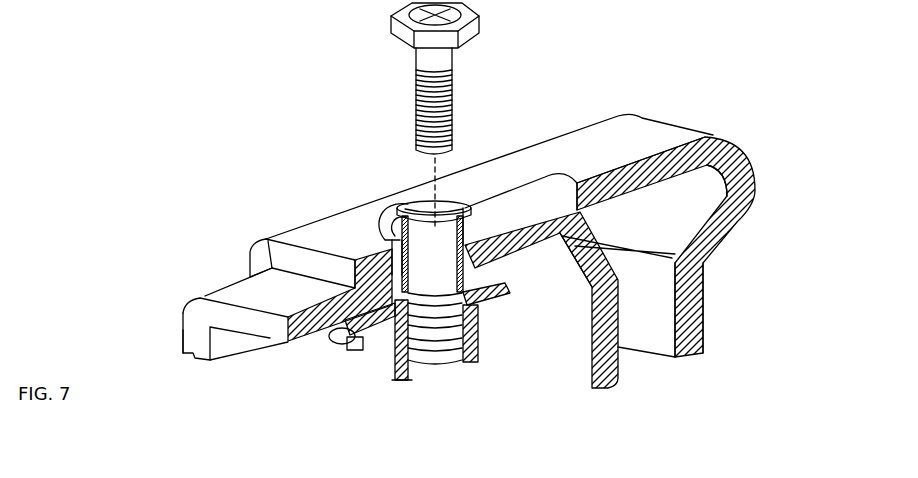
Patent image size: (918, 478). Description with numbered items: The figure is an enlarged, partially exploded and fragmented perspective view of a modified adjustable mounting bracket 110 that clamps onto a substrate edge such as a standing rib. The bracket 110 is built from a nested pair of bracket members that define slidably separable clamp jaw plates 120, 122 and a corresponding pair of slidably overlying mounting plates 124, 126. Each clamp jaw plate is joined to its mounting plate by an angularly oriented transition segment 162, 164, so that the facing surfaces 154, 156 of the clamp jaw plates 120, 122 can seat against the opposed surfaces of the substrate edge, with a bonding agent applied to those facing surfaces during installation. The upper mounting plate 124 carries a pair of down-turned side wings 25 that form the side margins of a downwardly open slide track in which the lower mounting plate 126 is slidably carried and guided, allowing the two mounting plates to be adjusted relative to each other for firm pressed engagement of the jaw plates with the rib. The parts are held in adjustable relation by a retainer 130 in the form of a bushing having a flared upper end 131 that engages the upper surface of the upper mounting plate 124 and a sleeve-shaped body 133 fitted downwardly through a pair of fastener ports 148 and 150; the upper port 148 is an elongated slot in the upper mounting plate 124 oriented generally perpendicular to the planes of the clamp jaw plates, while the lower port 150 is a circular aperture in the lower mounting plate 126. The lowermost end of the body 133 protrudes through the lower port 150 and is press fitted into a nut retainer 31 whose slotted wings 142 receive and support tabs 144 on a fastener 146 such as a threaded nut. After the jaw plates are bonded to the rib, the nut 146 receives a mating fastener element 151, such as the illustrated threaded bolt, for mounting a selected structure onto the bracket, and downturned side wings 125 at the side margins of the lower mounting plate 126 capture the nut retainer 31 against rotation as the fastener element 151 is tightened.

The down-turned side wings 25 is at (252, 257).
The nut retainer 31 is at (488, 285).
The adjustable mounting bracket 110 is at (672, 120).
The clamp jaw plate 120 is at (705, 300).
The clamp jaw plate 122 is at (575, 380).
The upper mounting plate 124 is at (603, 127).
The downturned side wings 125 is at (187, 337).
The lower mounting plate 126 is at (233, 292).
The retainer 130 is at (383, 215).
The flared upper end 131 is at (450, 202).
The sleeve-shaped body 133 is at (463, 230).
The slotted wings 142 is at (337, 360).
The tabs 144 is at (373, 357).
The fastener 146 is at (467, 373).
The fastener port 148 is at (500, 187).
The fastener port 150 is at (420, 223).
The fastener element 151 is at (420, 97).
The facing surface 154 is at (655, 347).
The facing surface 156 is at (618, 362).
The transition segment 162 is at (737, 220).
The transition segment 164 is at (572, 262).